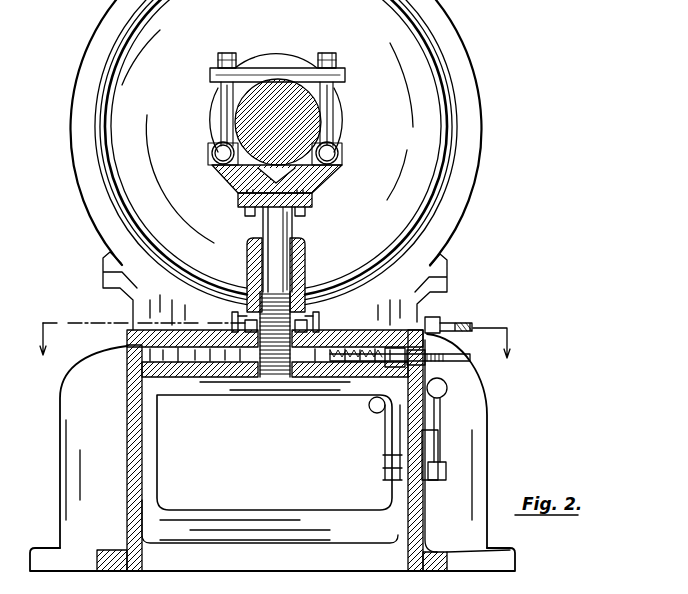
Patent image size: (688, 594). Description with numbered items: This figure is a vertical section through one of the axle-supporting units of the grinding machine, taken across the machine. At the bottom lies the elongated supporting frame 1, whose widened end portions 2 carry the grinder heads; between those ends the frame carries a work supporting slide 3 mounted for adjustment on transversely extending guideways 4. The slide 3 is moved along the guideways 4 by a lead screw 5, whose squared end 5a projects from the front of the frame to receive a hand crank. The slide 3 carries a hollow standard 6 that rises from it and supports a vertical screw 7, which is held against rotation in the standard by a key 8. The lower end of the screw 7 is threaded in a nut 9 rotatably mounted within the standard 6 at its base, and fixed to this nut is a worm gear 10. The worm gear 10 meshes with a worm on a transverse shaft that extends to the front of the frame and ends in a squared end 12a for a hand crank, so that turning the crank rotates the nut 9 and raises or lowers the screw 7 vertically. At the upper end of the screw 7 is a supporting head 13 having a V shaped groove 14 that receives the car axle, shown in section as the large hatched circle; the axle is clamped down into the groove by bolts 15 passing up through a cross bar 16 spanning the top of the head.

The supporting frame 1 is at (410, 518).
The widened end portion 2 is at (485, 478).
The work supporting slide 3 is at (456, 300).
The guideway 4 is at (183, 362).
The lead screw 5 is at (376, 397).
The squared end 5a is at (470, 363).
The hollow standard 6 is at (306, 266).
The vertical screw 7 is at (262, 228).
The key 8 is at (294, 226).
The nut 9 is at (247, 300).
The worm gear 10 is at (252, 378).
The squared end 12a is at (456, 325).
The supporting head 13 is at (328, 183).
The V shaped groove 14 is at (223, 182).
The bolt 15 is at (338, 97).
The cross bar 16 is at (288, 67).